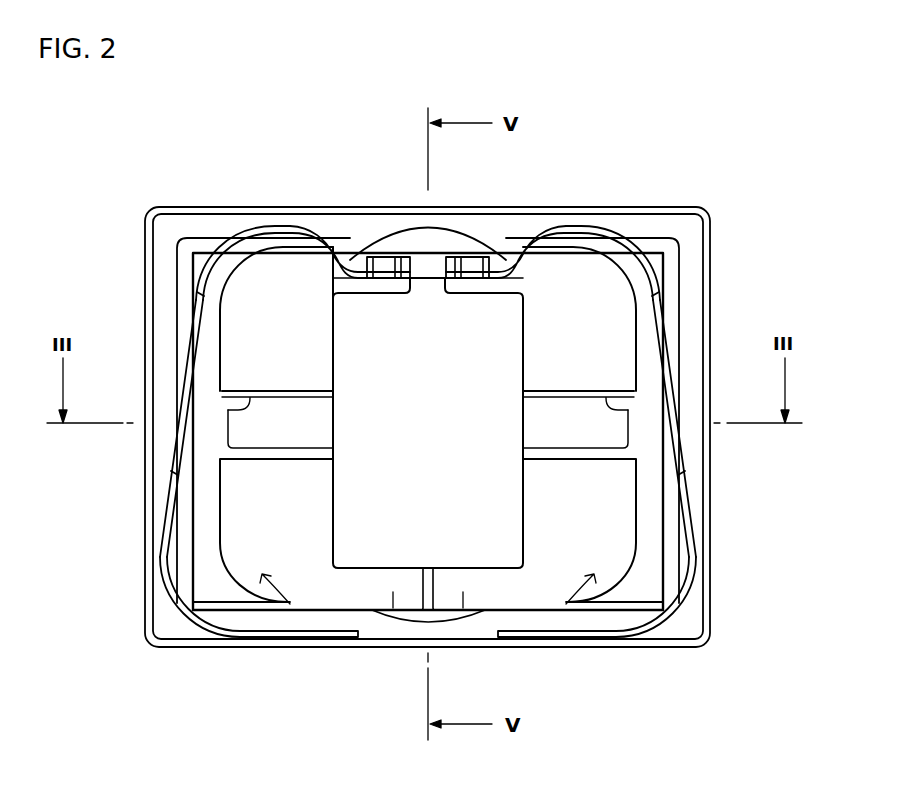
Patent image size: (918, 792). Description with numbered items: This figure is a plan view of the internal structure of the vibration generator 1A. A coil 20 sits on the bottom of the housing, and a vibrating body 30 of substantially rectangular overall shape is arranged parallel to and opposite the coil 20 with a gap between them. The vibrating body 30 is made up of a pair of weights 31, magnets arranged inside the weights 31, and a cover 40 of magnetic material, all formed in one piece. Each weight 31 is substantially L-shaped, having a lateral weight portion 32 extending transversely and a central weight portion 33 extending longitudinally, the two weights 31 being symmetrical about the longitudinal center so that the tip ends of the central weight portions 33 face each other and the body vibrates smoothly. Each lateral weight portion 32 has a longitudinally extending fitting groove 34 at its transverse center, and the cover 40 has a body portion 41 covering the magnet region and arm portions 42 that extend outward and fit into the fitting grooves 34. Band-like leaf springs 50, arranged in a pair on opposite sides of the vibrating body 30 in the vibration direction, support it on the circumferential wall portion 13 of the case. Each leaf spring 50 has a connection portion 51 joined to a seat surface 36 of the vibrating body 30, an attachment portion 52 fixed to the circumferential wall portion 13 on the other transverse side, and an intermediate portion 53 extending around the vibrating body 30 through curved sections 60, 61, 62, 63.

The vibration generator 1A is at (402, 100).
The circumferential wall portion 13 is at (191, 207).
The coil 20 is at (432, 236).
The vibrating body 30 is at (448, 617).
The weights 31 is at (246, 586).
The lateral weight portion 32 is at (240, 323).
The central weight portion 33 is at (395, 597).
The fitting groove 34 is at (228, 408).
The seat surfaces 36 is at (378, 259).
The cover 40 is at (443, 425).
The body portion 41 is at (370, 548).
The arm portions 42 is at (243, 437).
The leaf springs 50 is at (151, 508).
The connection portion 51 is at (388, 262).
The attachment portion 52 is at (281, 643).
The intermediate portion 53 is at (190, 350).
The curved section 60 is at (357, 265).
The curved section 61 is at (313, 234).
The curved section 62 is at (237, 237).
The curved section 63 is at (174, 581).